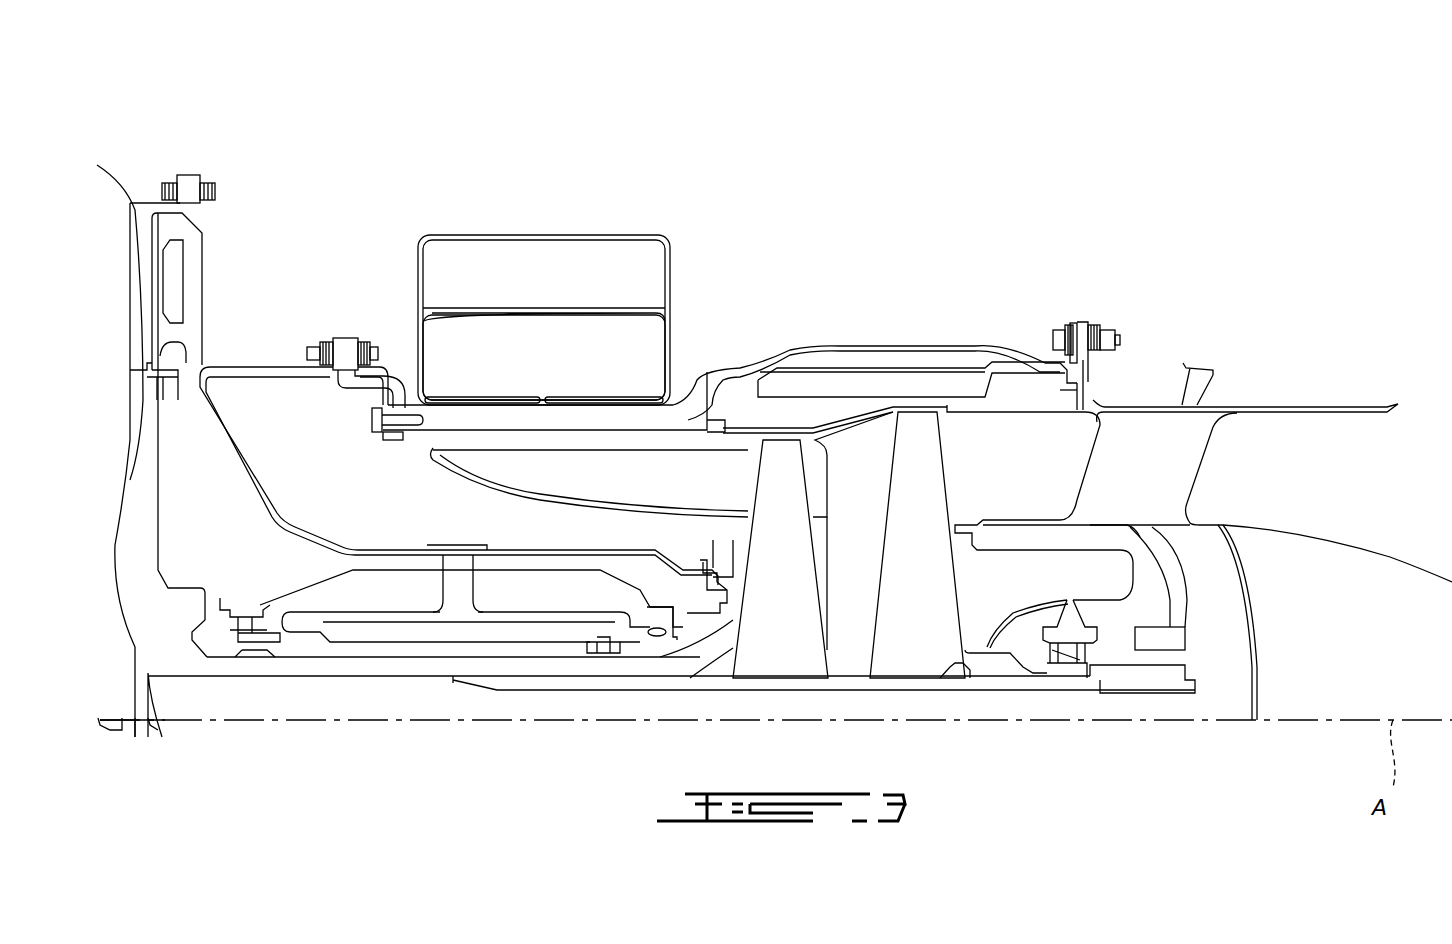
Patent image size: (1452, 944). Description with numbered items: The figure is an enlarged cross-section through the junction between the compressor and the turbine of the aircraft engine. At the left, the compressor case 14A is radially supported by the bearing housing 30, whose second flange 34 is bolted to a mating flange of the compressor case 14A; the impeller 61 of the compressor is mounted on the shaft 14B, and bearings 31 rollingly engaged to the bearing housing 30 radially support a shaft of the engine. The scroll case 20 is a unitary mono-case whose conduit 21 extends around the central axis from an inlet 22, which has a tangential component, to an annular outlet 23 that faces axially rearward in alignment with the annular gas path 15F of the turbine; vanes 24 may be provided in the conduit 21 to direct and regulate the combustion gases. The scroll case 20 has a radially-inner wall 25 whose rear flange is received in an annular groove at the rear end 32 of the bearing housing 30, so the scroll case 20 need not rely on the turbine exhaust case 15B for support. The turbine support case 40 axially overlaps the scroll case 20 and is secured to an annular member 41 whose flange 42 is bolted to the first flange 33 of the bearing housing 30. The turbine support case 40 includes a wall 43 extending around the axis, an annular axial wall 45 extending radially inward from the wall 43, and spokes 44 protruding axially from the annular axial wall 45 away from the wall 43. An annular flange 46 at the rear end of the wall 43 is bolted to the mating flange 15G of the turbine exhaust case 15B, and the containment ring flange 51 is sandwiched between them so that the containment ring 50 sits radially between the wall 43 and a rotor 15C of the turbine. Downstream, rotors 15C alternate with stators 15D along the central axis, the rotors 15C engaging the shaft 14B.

The compressor case 14A is at (152, 210).
The shaft 14B is at (430, 663).
The turbine exhaust case 15B is at (1318, 403).
The rotor 15C is at (927, 463).
The stator 15D is at (870, 488).
The annular gas path 15F is at (1048, 497).
The mating flange 15G is at (1093, 323).
The scroll case 20 is at (697, 315).
The conduit 21 is at (488, 345).
The inlet 22 is at (560, 285).
The outlet 23 is at (735, 485).
The vanes 24 is at (523, 453).
The radially-inner wall 25 is at (455, 480).
The bearing housing 30 is at (370, 505).
The bearings 31 is at (306, 655).
The rear end 32 is at (697, 541).
The first flange 33 is at (340, 350).
The second flange 34 is at (210, 200).
The turbine support case 40 is at (805, 328).
The annular member 41 is at (393, 442).
The flange 42 is at (370, 377).
The wall 43 is at (937, 337).
The spokes 44 is at (587, 420).
The annular axial wall 45 is at (688, 421).
The annular flange 46 is at (1072, 322).
The containment ring 50 is at (857, 385).
The containment ring flange 51 is at (1093, 353).
The impeller 61 is at (138, 550).